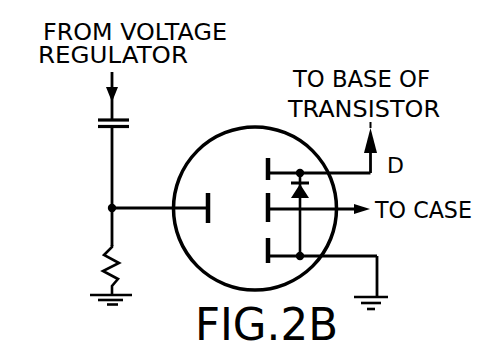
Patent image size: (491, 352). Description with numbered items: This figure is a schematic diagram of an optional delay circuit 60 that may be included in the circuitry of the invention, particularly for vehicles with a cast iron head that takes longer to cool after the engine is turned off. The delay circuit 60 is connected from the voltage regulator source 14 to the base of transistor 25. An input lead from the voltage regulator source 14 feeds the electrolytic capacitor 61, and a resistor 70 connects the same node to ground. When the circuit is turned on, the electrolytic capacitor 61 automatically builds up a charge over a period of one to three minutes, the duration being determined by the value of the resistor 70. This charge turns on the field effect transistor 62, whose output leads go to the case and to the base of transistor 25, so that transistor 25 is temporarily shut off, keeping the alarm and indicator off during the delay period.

The voltage regulator source 14 is at (161, 81).
The transistor 25 is at (420, 134).
The delay circuit 60 is at (86, 174).
The electrolytic capacitor 61 is at (119, 119).
The field effect transistor 62 is at (228, 132).
The resistor 70 is at (118, 249).